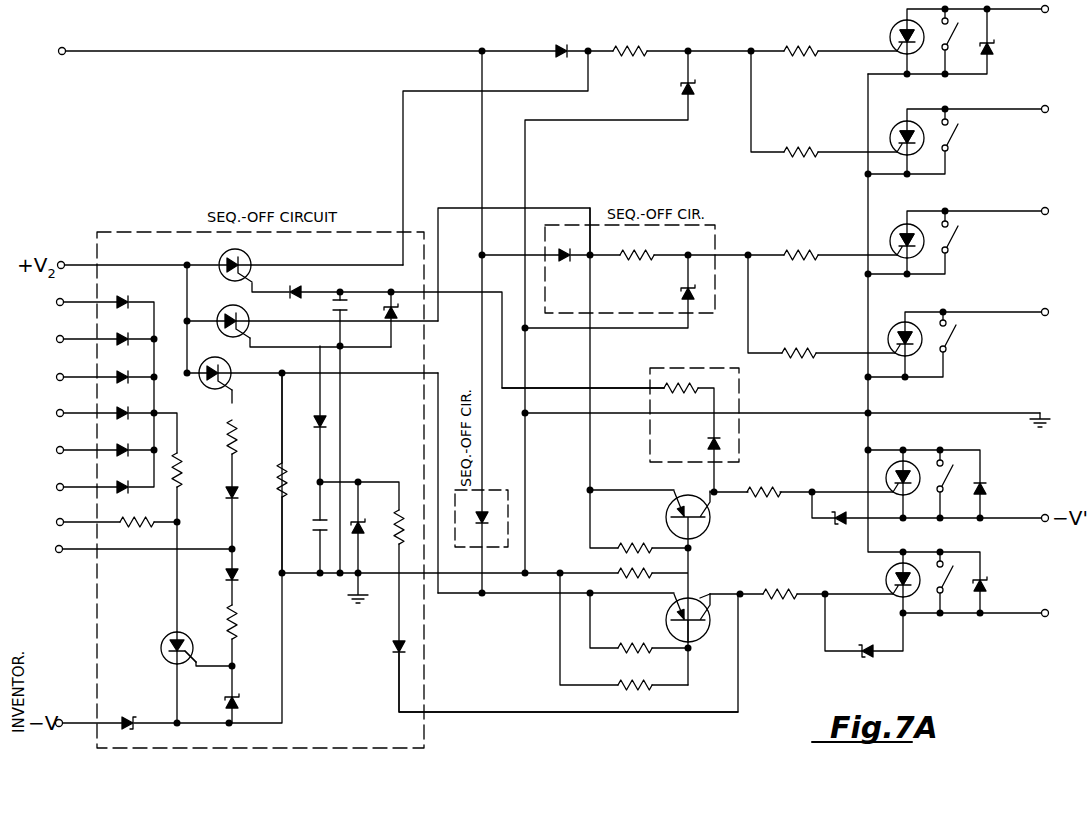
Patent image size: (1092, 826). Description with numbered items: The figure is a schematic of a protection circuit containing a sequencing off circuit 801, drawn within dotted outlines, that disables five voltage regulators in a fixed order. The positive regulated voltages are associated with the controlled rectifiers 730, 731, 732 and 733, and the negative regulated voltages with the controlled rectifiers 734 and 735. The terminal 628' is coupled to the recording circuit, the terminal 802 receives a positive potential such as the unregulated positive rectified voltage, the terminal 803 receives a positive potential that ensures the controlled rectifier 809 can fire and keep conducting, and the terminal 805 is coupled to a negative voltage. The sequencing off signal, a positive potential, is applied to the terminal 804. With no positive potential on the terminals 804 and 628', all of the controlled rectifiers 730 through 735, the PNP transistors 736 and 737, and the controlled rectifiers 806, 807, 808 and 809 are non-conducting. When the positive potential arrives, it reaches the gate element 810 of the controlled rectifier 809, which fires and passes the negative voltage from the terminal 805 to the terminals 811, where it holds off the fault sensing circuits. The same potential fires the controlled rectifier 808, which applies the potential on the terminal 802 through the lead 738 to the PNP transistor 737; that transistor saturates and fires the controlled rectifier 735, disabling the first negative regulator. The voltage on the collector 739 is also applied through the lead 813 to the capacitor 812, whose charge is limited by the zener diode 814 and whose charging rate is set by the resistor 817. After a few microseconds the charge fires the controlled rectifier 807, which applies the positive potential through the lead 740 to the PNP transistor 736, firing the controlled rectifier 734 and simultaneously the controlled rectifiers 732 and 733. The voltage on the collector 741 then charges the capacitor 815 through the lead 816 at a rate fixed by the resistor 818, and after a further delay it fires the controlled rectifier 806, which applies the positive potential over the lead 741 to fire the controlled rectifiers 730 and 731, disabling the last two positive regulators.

The terminal 628' is at (37, 50).
The controlled rectifier 730 is at (893, 30).
The controlled rectifier 731 is at (894, 128).
The controlled rectifier 732 is at (894, 231).
The controlled rectifier 733 is at (892, 329).
The controlled rectifier 734 is at (892, 467).
The controlled rectifier 735 is at (887, 583).
The PNP transistor 736 is at (702, 533).
The PNP transistor 737 is at (702, 637).
The lead 738 is at (522, 596).
The collector 739 is at (702, 604).
The lead 740 is at (572, 208).
The lead 741 is at (403, 152).
The sequencing off circuit 801 is at (424, 748).
The terminal 802 is at (59, 261).
The terminal 803 is at (57, 519).
The terminal 804 is at (59, 553).
The terminal 805 is at (59, 719).
The controlled rectifier 806 is at (247, 256).
The controlled rectifier 807 is at (244, 319).
The controlled rectifier 808 is at (202, 385).
The controlled rectifier 809 is at (171, 633).
The gate element 810 is at (175, 664).
The terminals 811 is at (57, 375).
The capacitor 812 is at (313, 521).
The lead 813 is at (487, 712).
The zener diode 814 is at (366, 522).
The capacitor 815 is at (337, 299).
The lead 816 is at (560, 388).
The resistor 817 is at (395, 540).
The resistor 818 is at (695, 385).